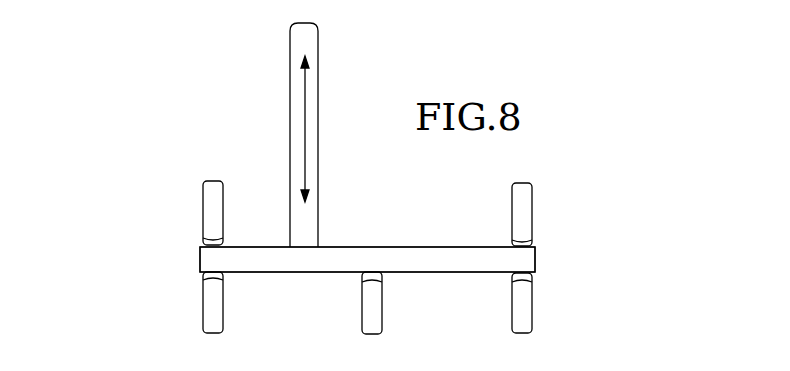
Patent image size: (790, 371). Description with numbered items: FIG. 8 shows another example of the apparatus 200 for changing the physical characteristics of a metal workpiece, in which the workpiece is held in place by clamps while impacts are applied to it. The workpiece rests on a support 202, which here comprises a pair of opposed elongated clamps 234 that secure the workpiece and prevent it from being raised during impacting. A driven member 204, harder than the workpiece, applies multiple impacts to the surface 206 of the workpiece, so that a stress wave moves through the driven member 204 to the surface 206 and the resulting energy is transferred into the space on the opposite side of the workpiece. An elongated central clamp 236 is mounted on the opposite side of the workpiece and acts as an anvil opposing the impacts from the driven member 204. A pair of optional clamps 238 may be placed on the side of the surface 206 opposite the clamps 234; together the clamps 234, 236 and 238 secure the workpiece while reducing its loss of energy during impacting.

The apparatus 200 is at (348, 83).
The support 202 is at (185, 226).
The driven member 204 is at (290, 93).
The surface 206 is at (415, 247).
The opposed clamps 234 is at (203, 195).
The central clamp 236 is at (382, 318).
The optional clamps 238 is at (203, 316).